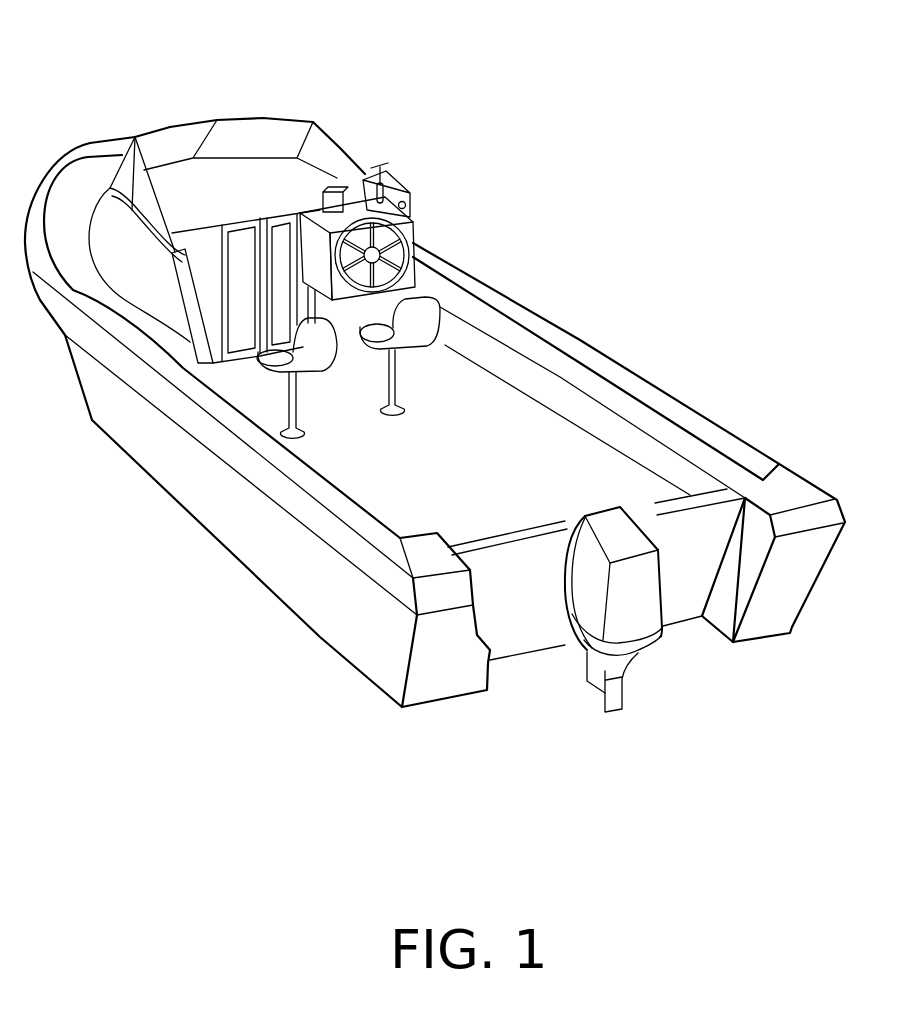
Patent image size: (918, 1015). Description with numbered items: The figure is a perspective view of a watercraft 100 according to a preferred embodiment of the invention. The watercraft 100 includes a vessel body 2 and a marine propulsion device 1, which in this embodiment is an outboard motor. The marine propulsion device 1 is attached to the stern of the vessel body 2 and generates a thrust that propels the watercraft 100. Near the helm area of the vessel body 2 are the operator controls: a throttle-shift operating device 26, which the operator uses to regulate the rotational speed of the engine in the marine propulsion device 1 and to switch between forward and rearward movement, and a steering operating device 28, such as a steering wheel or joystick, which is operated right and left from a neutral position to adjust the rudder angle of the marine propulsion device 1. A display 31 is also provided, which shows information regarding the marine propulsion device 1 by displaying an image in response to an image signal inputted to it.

The watercraft 100 is at (640, 293).
The vessel body 2 is at (664, 400).
The marine propulsion device 1 is at (635, 630).
The steering operating device 28 is at (420, 234).
The throttle-shift operating device 26 is at (395, 178).
The display 31 is at (330, 188).